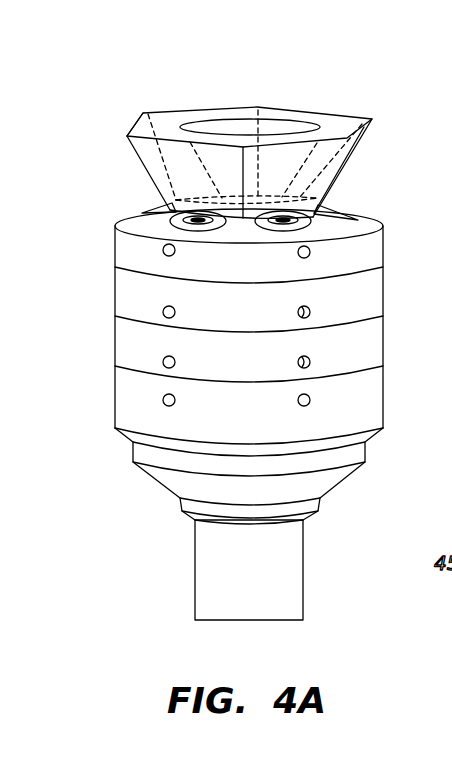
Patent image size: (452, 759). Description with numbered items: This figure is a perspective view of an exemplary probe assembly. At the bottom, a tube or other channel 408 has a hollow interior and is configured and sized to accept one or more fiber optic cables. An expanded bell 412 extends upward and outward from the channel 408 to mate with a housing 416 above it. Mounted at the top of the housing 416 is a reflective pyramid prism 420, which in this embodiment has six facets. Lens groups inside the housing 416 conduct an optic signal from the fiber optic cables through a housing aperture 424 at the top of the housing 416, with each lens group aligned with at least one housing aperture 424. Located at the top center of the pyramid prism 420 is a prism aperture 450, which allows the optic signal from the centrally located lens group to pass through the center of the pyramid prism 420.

The tube or other channel 408 is at (195, 563).
The expanded bell 412 is at (157, 482).
The housing 416 is at (114, 291).
The reflective pyramid prism 420 is at (227, 127).
The housing aperture 424 is at (150, 208).
The prism aperture 450 is at (227, 116).